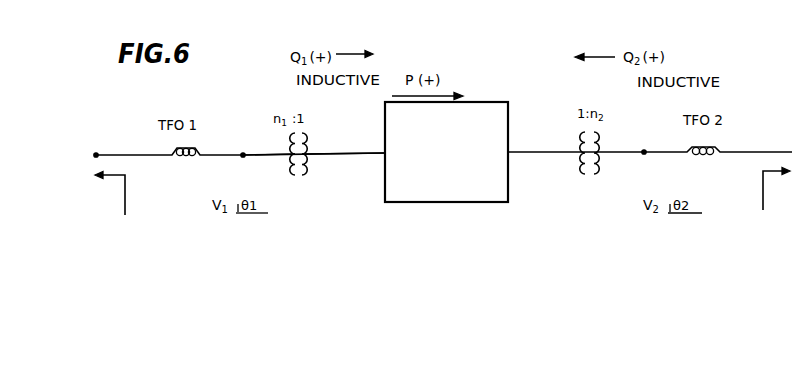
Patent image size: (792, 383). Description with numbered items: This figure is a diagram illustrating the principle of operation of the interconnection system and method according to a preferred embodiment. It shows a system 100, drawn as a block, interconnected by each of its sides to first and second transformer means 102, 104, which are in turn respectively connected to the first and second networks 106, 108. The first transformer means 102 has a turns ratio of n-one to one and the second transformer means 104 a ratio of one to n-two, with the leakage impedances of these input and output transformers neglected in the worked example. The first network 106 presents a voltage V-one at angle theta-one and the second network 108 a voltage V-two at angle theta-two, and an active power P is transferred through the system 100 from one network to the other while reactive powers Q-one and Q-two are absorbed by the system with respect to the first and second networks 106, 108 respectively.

The system 100 is at (478, 178).
The first transformer means 102 is at (297, 184).
The second transformer means 104 is at (588, 183).
The first network 106 is at (116, 205).
The second network 108 is at (771, 201).